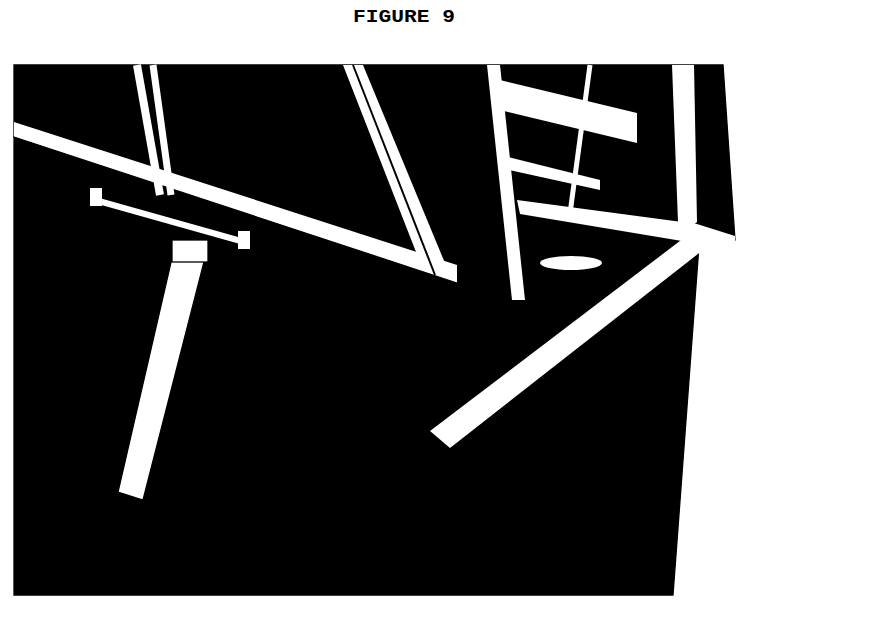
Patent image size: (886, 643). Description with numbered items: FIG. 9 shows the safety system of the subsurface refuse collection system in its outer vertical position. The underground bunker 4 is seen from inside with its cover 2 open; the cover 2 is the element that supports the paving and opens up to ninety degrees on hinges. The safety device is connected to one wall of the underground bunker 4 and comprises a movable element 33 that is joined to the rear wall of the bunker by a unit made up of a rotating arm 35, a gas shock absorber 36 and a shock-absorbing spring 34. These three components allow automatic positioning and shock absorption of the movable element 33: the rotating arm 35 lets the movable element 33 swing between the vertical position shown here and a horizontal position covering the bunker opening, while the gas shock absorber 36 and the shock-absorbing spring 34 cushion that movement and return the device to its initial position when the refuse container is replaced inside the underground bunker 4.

The cover 2 is at (722, 160).
The underground bunker 4 is at (672, 541).
The movable element 33 is at (520, 206).
The shock-absorbing spring 34 is at (198, 216).
The rotating arm 35 is at (176, 355).
The gas shock absorber 36 is at (161, 186).